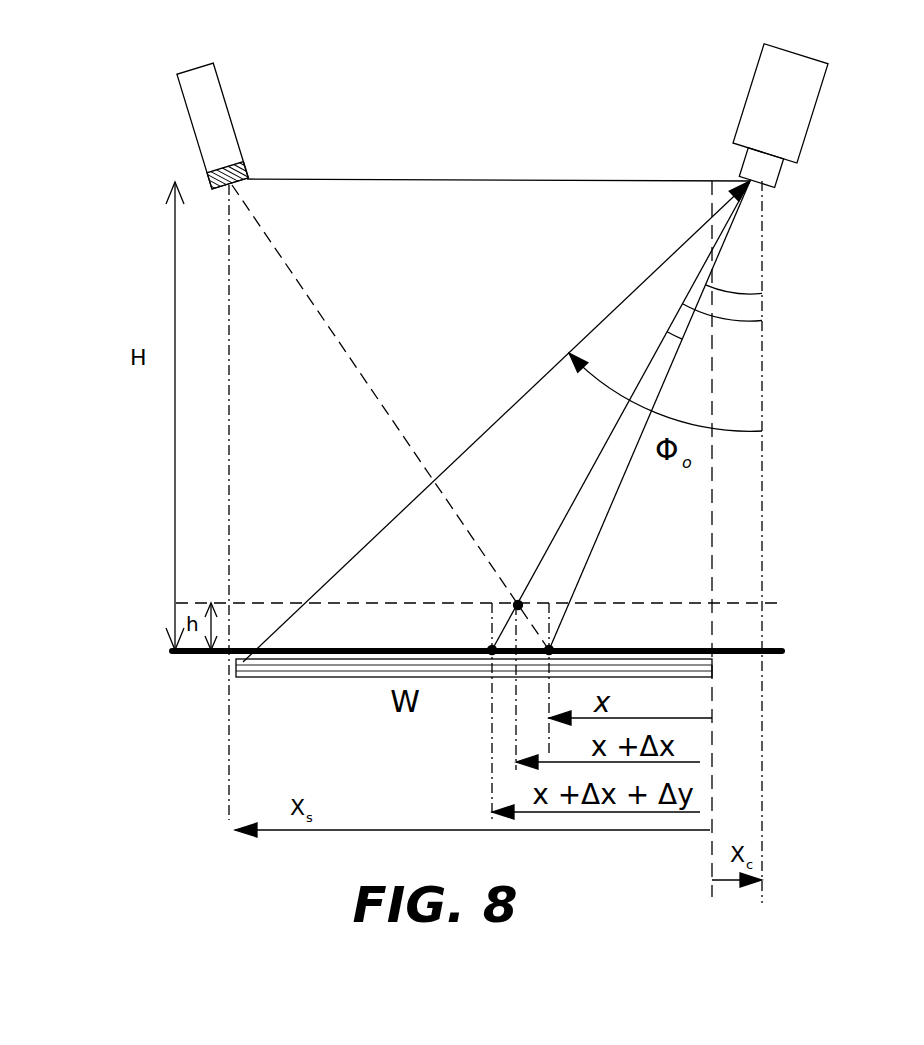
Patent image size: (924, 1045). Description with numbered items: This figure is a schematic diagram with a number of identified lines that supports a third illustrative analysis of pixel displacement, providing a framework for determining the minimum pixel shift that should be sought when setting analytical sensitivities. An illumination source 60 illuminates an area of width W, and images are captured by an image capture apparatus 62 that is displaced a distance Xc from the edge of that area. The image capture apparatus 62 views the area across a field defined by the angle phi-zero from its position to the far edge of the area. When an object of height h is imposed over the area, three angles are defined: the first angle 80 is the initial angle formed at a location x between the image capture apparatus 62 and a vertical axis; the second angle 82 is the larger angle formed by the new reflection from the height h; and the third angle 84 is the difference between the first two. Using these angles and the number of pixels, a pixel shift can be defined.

The illumination source 60 is at (218, 132).
The image capture apparatus 62 is at (760, 127).
The first angle 80 is at (742, 292).
The second angle 82 is at (735, 326).
The third angle 84 is at (664, 343).